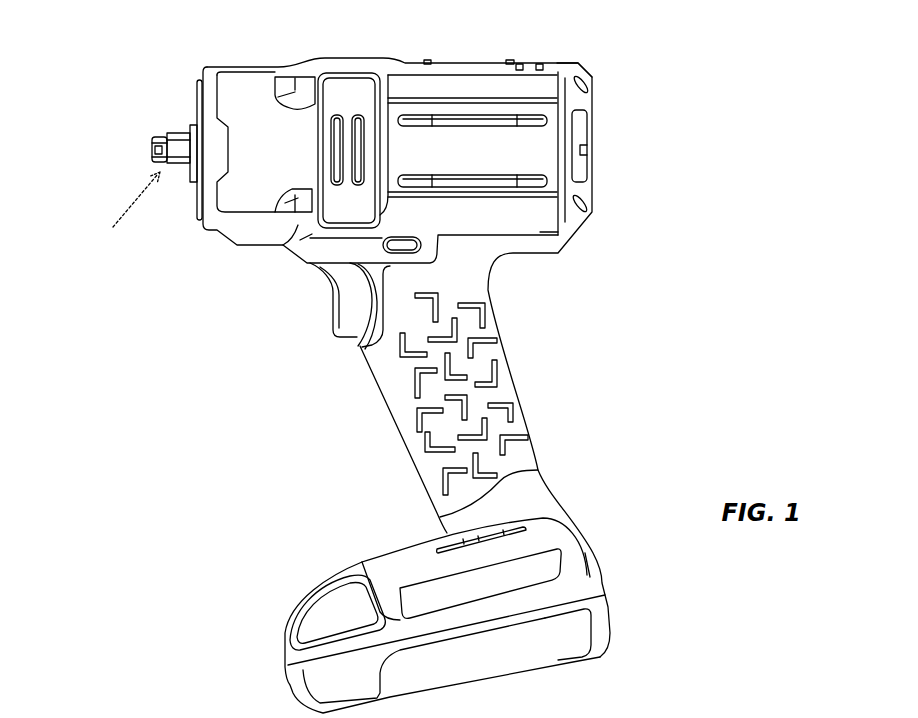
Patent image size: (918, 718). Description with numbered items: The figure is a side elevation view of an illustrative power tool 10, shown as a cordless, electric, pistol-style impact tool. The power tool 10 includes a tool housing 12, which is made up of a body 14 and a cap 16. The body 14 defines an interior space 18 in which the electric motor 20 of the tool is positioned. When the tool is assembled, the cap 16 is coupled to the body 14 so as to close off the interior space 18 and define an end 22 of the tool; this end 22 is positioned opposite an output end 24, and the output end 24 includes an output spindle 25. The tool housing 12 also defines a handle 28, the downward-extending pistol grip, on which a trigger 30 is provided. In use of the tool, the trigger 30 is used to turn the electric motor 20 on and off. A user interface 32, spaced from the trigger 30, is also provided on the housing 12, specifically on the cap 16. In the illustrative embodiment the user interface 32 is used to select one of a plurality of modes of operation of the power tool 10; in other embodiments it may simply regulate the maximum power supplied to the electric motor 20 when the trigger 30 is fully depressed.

The power tool 10 is at (655, 48).
The tool housing 12 is at (545, 61).
The body 14 is at (402, 82).
The cap 16 is at (592, 123).
The interior space 18 is at (450, 88).
The electric motor 20 is at (540, 184).
The end 22 is at (592, 176).
The output end 24 is at (153, 145).
The output spindle 25 is at (122, 217).
The handle 28 is at (473, 365).
The trigger 30 is at (328, 322).
The user interface 32 is at (610, 90).